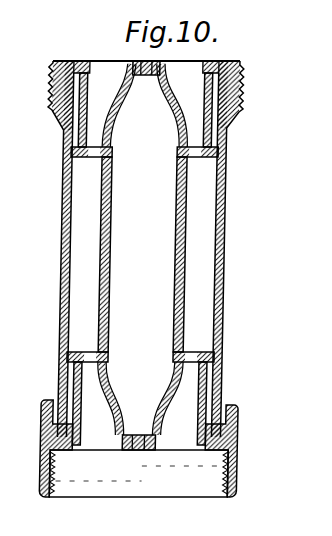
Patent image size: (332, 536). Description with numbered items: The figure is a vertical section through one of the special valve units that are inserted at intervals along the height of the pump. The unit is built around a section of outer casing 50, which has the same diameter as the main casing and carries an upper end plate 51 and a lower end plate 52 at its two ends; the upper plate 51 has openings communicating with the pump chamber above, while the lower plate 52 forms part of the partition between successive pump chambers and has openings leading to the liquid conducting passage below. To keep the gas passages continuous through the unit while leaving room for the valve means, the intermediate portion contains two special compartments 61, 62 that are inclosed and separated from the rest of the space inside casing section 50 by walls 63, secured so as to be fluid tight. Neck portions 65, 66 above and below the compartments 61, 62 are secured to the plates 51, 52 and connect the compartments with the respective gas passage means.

The outer casing section 50 is at (225, 295).
The upper end plate 51 is at (153, 64).
The lower end plate 52 is at (135, 450).
The compartment 61 is at (88, 238).
The compartment 62 is at (190, 253).
The walls 63 is at (185, 197).
The neck portion 65 is at (62, 127).
The neck portion 66 is at (206, 135).